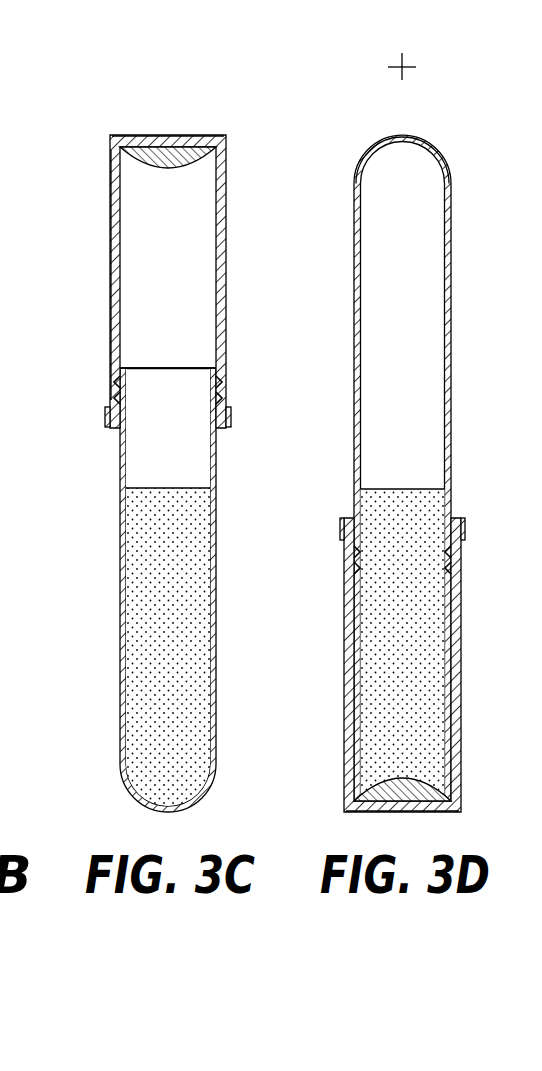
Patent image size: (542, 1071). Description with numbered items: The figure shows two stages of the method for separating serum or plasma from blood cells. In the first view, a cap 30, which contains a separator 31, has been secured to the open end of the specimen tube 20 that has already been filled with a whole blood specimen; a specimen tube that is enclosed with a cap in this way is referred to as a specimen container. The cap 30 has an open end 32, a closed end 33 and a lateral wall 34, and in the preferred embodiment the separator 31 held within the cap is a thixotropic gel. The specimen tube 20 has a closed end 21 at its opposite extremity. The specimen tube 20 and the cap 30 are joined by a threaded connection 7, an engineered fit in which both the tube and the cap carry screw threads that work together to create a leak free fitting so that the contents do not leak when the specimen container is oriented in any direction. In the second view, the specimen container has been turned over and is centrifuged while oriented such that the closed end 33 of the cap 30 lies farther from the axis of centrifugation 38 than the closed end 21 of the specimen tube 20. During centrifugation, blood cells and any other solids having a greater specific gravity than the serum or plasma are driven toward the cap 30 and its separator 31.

In FIG. 3C, the threaded connection 7 is at (222, 388).
In FIG. 3C, the specimen tube 20 is at (98, 460).
In FIG. 3D, the specimen tube 20 is at (462, 325).
In FIG. 3D, the closed end 21 is at (405, 135).
In FIG. 3C, the cap 30 is at (88, 160).
In FIG. 3D, the cap 30 is at (324, 638).
In FIG. 3C, the separator 31 is at (168, 150).
In FIG. 3C, the open end 32 is at (176, 438).
In FIG. 3C, the closed end 33 is at (155, 135).
In FIG. 3D, the closed end 33 is at (435, 813).
In FIG. 3C, the lateral wall 34 is at (110, 262).
In FIG. 3D, the axis of centrifugation 38 is at (396, 58).